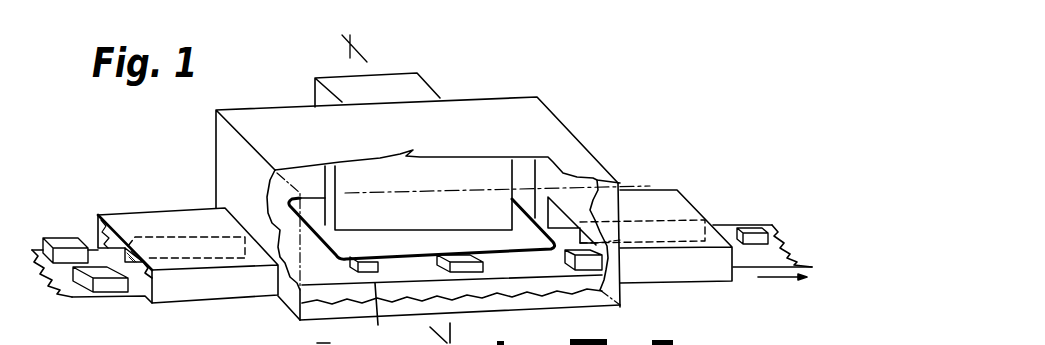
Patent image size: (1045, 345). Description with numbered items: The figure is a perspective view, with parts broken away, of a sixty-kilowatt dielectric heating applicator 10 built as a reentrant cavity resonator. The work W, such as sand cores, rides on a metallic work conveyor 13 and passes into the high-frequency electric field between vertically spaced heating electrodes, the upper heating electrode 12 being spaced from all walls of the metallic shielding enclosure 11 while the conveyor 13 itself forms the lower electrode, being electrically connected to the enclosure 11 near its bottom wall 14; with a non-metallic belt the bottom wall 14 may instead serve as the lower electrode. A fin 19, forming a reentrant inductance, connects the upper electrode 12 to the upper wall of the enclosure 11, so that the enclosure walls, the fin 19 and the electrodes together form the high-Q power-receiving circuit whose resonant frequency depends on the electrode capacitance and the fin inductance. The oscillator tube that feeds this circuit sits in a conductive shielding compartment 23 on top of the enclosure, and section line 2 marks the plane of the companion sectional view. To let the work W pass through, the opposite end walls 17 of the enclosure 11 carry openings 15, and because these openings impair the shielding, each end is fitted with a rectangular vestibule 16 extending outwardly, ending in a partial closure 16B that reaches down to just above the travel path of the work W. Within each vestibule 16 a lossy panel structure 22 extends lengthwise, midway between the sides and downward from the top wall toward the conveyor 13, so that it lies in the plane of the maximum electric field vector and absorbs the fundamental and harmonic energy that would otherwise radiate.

The section line 2- 2 is at (352, 43).
The dielectric heating applicator 10 is at (562, 78).
The shielding enclosure 11 is at (545, 122).
The heating electrode 12 is at (497, 240).
The work conveyor 13 is at (75, 290).
The bottom wall 14 is at (555, 288).
The opening 15 is at (555, 220).
The vestibule 16 is at (185, 217).
The partial closure 16B is at (98, 213).
The end wall 17 is at (222, 137).
The fin 19 is at (365, 175).
The lossy panel structure 22 is at (128, 246).
The shielding compartment 23 is at (418, 92).
The work W is at (98, 272).